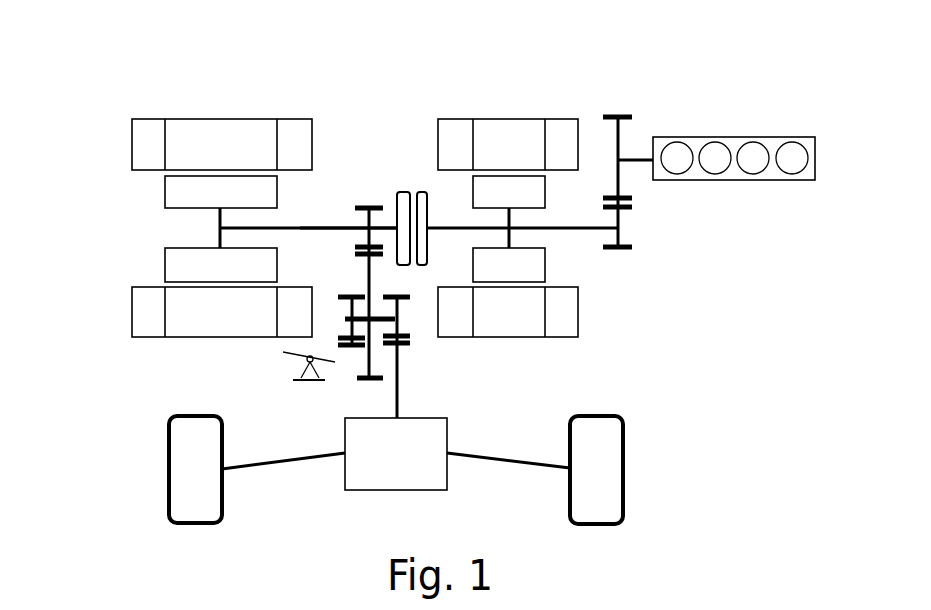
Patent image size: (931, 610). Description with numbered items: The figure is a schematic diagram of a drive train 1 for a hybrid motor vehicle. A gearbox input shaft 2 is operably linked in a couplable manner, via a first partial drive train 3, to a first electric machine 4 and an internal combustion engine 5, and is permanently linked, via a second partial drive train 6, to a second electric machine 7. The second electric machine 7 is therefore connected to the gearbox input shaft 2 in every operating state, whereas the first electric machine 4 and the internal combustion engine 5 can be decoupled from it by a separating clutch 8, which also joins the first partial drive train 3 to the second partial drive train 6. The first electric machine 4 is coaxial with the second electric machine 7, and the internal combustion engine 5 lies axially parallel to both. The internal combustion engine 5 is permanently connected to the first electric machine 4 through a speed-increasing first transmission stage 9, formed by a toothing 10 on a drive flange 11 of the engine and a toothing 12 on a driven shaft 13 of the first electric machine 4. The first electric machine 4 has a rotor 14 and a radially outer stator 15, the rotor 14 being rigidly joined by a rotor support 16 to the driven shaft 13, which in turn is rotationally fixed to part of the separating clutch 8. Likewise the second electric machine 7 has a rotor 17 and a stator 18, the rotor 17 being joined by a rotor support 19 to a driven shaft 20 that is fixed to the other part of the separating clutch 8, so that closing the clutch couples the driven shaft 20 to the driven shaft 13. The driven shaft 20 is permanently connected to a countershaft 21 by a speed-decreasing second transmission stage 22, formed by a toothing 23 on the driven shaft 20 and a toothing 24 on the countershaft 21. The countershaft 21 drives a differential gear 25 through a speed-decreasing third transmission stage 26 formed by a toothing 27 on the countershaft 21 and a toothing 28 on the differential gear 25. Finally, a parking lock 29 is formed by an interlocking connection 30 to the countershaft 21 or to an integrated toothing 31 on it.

The drive train 1 is at (160, 92).
The gearbox input shaft 2 is at (343, 294).
The first partial drive train 3 is at (440, 352).
The first electric machine 4 is at (558, 103).
The internal combustion engine 5 is at (770, 150).
The second partial drive train 6 is at (332, 228).
The second electric machine 7 is at (258, 105).
The separating clutch 8 is at (411, 178).
The first transmission stage 9 is at (636, 205).
The toothing 10 is at (619, 117).
The drive flange 11 is at (636, 160).
The toothing 12 is at (618, 250).
The driven shaft 13 is at (440, 225).
The rotor 14 is at (533, 185).
The stator 15 is at (513, 145).
The rotor support 16 is at (510, 213).
The rotor 17 is at (178, 197).
The stator 18 is at (220, 148).
The rotor support 19 is at (220, 223).
The driven shaft 20 is at (308, 228).
The countershaft 21 is at (346, 303).
The second transmission stage 22 is at (356, 274).
The toothing 23 is at (370, 207).
The toothing 24 is at (358, 250).
The differential gear 25 is at (423, 480).
The third transmission stage 26 is at (414, 356).
The toothing 27 is at (396, 297).
The toothing 28 is at (413, 345).
The parking lock 29 is at (317, 382).
The interlocking connection 30 is at (349, 358).
The integrated toothing 31 is at (338, 347).